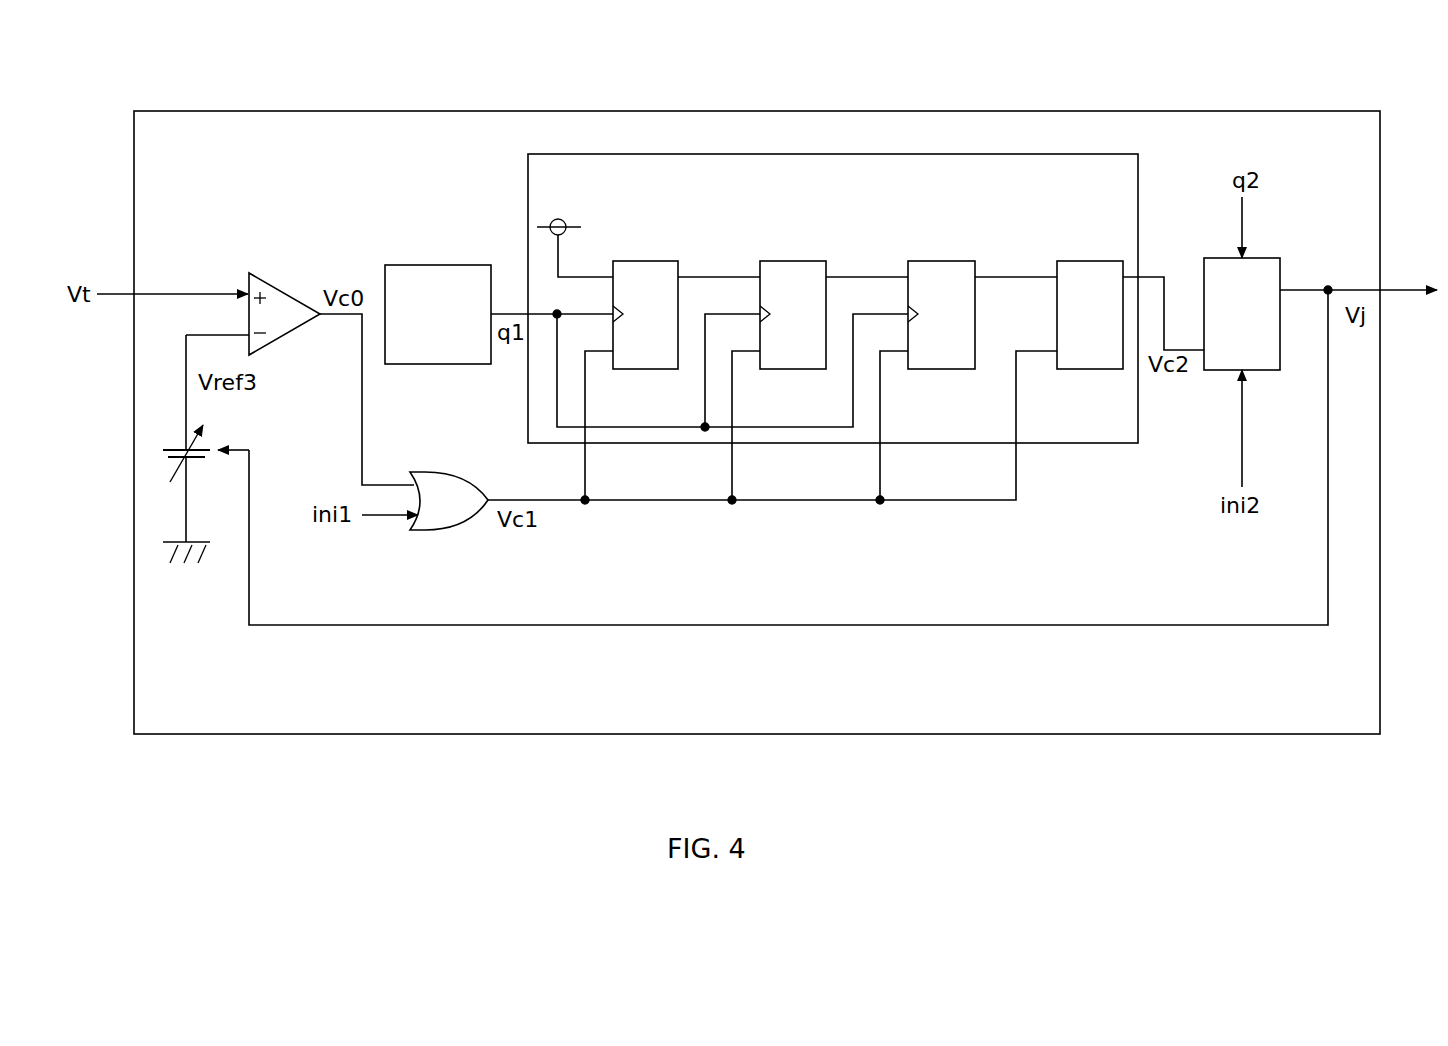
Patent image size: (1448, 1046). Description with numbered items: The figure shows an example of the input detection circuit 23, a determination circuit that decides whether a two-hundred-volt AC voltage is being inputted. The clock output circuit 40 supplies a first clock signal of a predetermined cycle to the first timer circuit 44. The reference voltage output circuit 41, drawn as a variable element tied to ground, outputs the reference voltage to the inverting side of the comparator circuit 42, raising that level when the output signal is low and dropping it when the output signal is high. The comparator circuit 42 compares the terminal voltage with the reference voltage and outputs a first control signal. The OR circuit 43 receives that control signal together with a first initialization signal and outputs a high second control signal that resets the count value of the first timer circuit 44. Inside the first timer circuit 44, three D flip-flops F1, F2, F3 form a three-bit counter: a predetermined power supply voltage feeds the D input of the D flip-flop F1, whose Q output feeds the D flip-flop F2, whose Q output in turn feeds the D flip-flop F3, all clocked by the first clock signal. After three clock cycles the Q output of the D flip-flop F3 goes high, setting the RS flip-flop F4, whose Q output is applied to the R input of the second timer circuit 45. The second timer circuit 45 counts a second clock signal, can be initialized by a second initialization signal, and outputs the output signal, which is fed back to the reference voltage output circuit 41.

The input detection circuit 23 is at (1157, 111).
The clock output circuit 40 is at (463, 263).
The reference voltage output circuit 41 is at (172, 447).
The comparator circuit 42 is at (285, 288).
The OR circuit 43 is at (440, 470).
The first timer circuit 44 is at (813, 342).
The second timer circuit 45 is at (1265, 258).
The D flip-flop F1 is at (638, 258).
The D flip-flop F2 is at (790, 258).
The D flip-flop F3 is at (940, 258).
The RS flip-flop F4 is at (1090, 258).